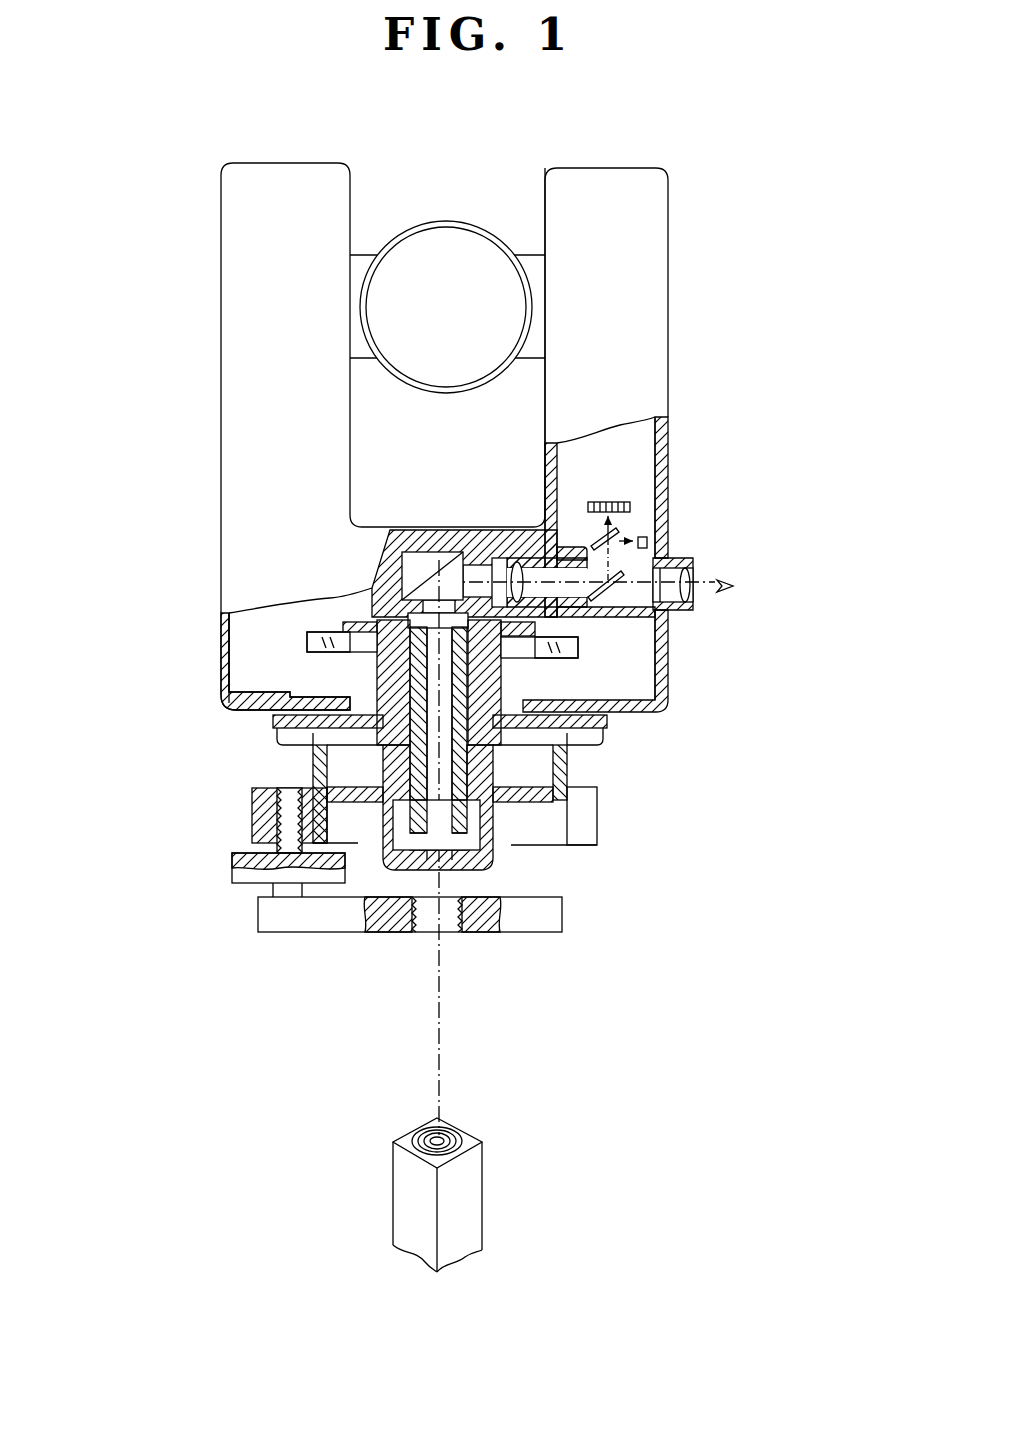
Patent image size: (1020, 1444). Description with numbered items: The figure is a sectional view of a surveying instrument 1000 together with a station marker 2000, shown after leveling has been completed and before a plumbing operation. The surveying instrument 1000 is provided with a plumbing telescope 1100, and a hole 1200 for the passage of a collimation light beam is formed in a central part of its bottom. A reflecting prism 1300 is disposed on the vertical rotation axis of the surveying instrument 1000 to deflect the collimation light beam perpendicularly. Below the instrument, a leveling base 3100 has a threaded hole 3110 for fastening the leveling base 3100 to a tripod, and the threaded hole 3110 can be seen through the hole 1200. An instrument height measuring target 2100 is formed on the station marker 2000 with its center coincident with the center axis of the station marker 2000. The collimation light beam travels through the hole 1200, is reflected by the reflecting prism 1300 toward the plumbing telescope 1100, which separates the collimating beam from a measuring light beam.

The surveying instrument 1000 is at (183, 618).
The plumbing telescope 1100 is at (682, 622).
The hole 1200 is at (446, 857).
The reflecting prism 1300 is at (443, 575).
The station marker 2000 is at (477, 1184).
The instrument height measuring target 2100 is at (465, 1136).
The leveling base 3100 is at (226, 834).
The threaded hole 3110 is at (447, 935).